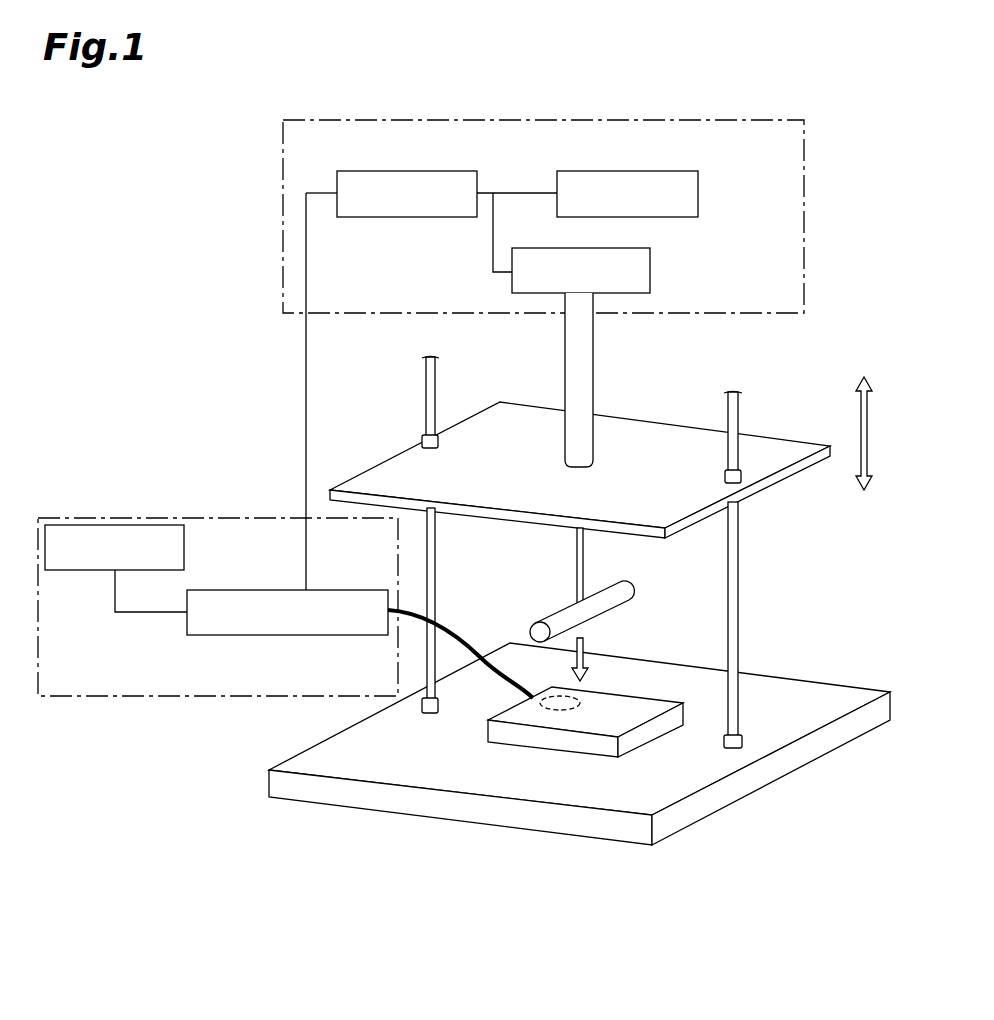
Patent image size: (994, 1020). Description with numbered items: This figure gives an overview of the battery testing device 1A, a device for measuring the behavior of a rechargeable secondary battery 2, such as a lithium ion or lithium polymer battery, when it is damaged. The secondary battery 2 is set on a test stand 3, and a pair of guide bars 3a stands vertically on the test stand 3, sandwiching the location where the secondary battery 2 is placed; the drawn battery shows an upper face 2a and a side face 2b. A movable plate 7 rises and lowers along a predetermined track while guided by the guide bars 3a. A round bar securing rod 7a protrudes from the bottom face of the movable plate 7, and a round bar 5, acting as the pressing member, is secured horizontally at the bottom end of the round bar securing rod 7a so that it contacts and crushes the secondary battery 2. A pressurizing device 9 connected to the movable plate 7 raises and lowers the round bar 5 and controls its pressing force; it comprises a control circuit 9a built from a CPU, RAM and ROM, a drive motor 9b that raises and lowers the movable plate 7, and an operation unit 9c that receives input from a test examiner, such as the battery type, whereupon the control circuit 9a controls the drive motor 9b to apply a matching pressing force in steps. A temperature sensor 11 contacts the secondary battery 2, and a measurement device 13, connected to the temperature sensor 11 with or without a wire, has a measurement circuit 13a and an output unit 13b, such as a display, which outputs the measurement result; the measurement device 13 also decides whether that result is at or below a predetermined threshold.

The battery testing device 1A is at (817, 138).
The pressurizing device 9 is at (792, 152).
The control circuit 9a is at (406, 217).
The drive motor 9b is at (650, 270).
The operation unit 9c is at (698, 193).
The measurement device 13 is at (186, 692).
The measurement circuit 13a is at (343, 590).
The output unit 13b is at (113, 525).
The movable plate 7 is at (790, 472).
The round bar securing rod 7a is at (584, 556).
The round bar 5 is at (612, 608).
The test stand 3 is at (800, 678).
The guide bars 3a is at (436, 556).
The secondary battery 2 is at (590, 746).
The upper surface of workpiece 2a is at (650, 707).
The side surface of workpiece 2b is at (652, 730).
The temperature sensor 11 is at (550, 708).